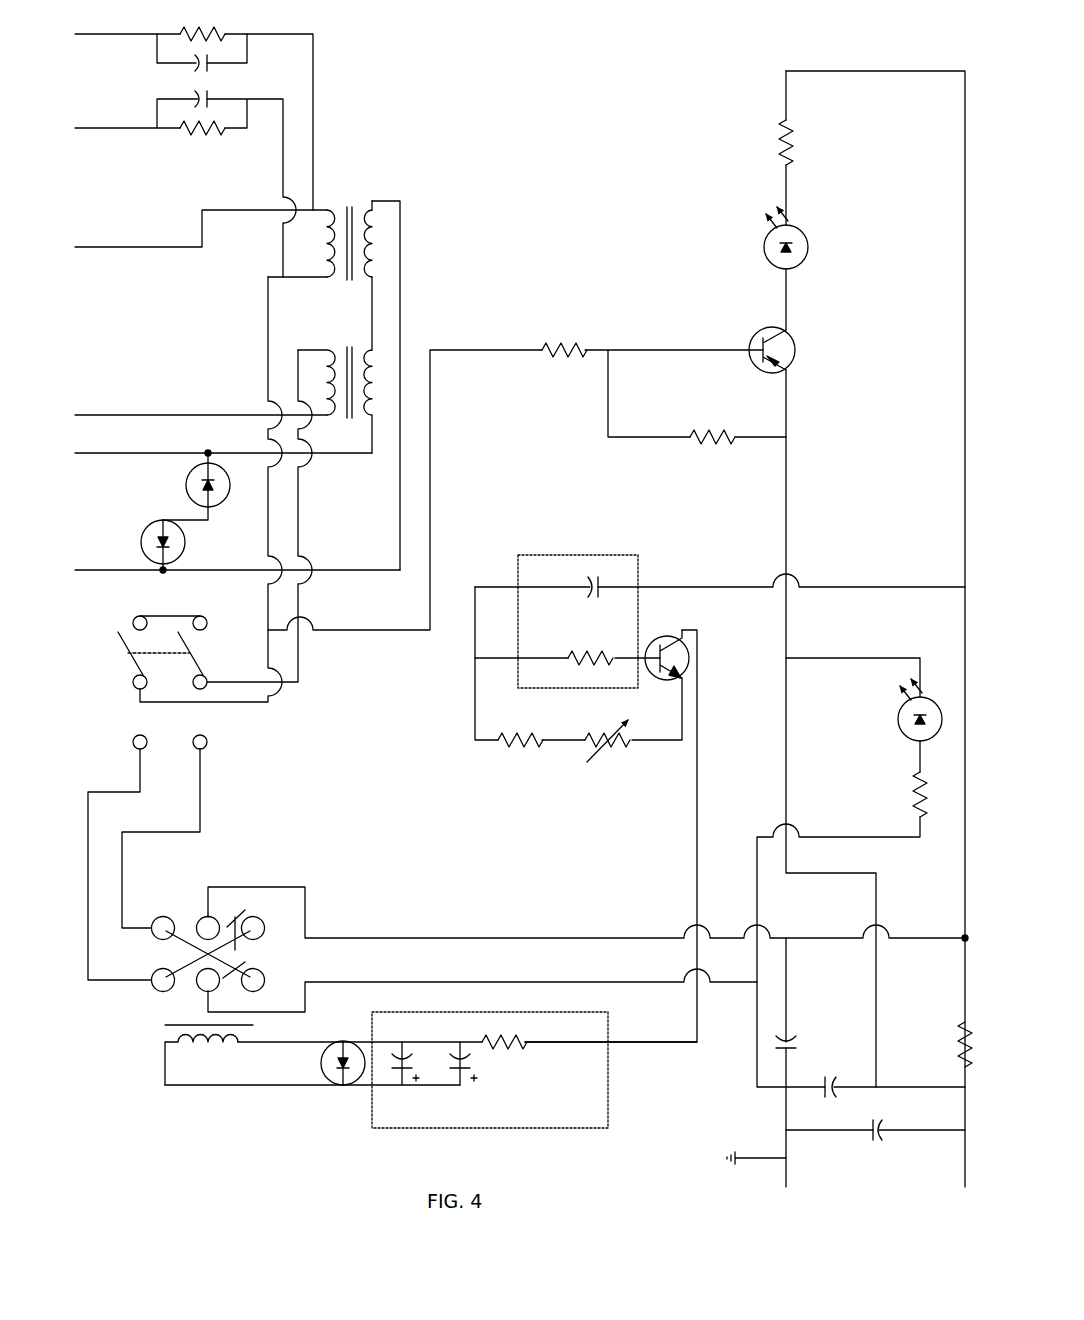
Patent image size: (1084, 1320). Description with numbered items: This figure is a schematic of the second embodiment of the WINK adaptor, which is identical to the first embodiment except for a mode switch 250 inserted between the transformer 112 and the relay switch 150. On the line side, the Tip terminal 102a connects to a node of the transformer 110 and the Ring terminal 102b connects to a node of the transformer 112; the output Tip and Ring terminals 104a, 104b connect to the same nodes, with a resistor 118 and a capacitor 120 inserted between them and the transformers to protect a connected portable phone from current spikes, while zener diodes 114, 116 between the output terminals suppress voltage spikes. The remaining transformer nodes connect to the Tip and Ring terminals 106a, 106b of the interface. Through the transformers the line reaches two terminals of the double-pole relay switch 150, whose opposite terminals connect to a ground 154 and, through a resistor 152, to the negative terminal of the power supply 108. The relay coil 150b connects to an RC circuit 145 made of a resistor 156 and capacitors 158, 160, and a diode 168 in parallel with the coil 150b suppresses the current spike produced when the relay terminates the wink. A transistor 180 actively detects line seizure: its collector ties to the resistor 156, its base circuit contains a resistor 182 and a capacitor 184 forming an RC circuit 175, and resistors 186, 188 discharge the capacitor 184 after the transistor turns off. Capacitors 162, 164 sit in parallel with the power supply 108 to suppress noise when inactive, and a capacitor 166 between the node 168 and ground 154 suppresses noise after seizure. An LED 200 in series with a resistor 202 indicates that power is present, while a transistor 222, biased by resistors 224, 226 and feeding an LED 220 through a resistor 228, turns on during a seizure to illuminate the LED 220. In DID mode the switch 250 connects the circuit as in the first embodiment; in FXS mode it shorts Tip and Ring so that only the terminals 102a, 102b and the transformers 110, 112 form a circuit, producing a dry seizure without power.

The Tip terminal 102a is at (88, 220).
The Ring terminal 102b is at (77, 412).
The Tip terminal 104a is at (80, 27).
The Ring terminal 104b is at (78, 121).
The Tip terminal 106a is at (76, 456).
The Ring terminal 106b is at (77, 583).
The power supply 108 is at (878, 1182).
The transformer 110 is at (336, 201).
The transformer 112 is at (343, 349).
The zener diode 114 is at (189, 543).
The zener diode 116 is at (183, 484).
The resistor 118 is at (208, 25).
The capacitor 120 is at (213, 74).
The RC circuit 145 is at (668, 1086).
The double-prong-double-throw relay switch 150 is at (195, 905).
The coil 150b is at (238, 1072).
The resistor 152 is at (950, 1045).
The ground 154 is at (744, 1147).
The resistor 156 is at (505, 1056).
The capacitor 158 is at (400, 1100).
The capacitor 160 is at (486, 1071).
The capacitor 162 is at (879, 1115).
The capacitor 164 is at (860, 1060).
The capacitor 166 is at (804, 1045).
The diode 168 is at (342, 1101).
The RC circuit 175 is at (562, 548).
The transistor 180 is at (650, 633).
The resistor 182 is at (598, 645).
The capacitor 184 is at (595, 601).
The resistor 186 is at (520, 758).
The variable resistor 188 is at (620, 758).
The LED 200 is at (887, 720).
The resistor 202 is at (908, 792).
The LED 220 is at (818, 262).
The transistor 222 is at (804, 365).
The resistor 224 is at (692, 452).
The resistor 226 is at (580, 366).
The resistor 228 is at (804, 143).
The switch 250 is at (131, 704).